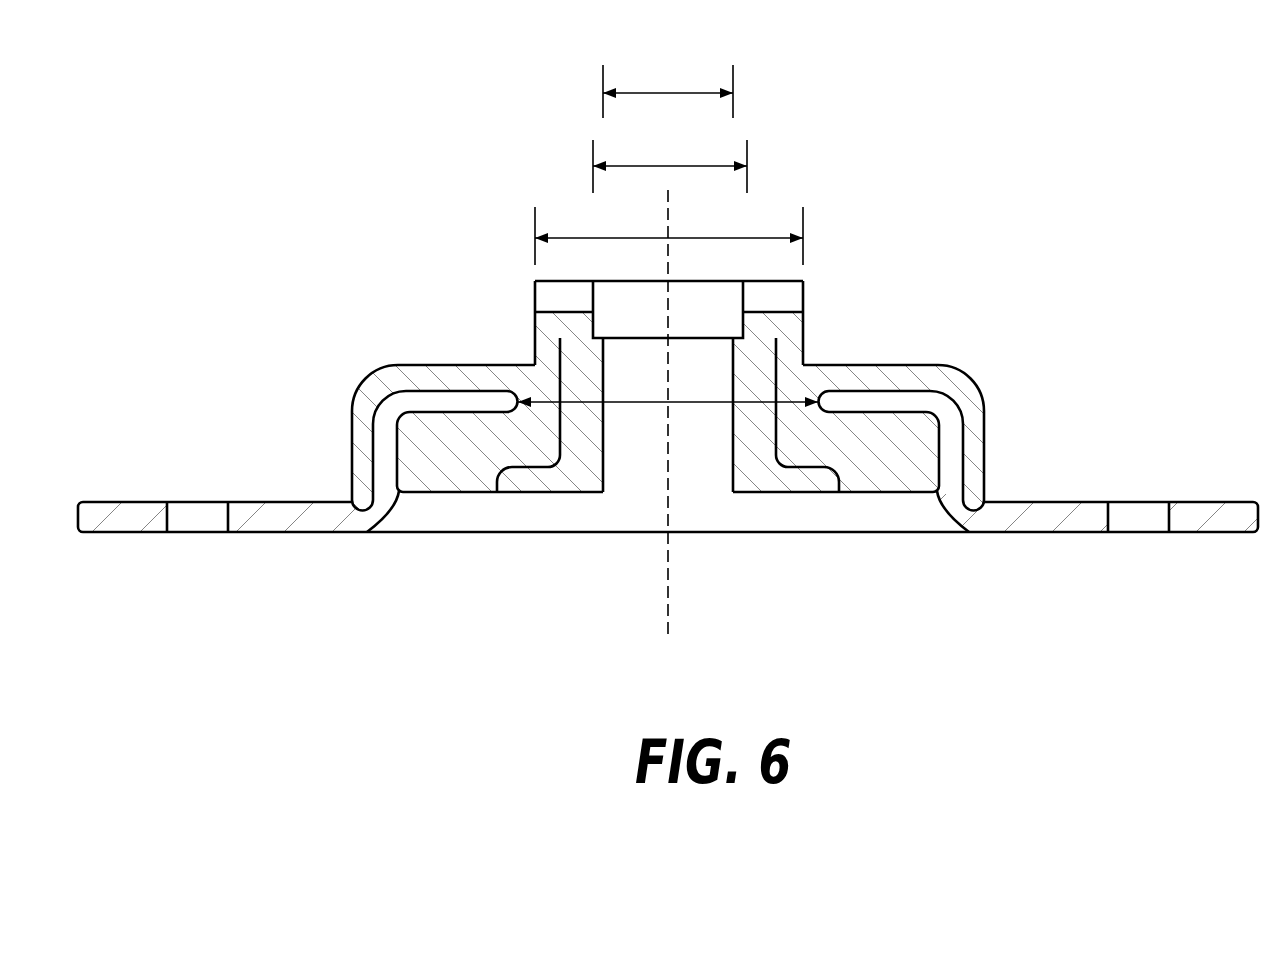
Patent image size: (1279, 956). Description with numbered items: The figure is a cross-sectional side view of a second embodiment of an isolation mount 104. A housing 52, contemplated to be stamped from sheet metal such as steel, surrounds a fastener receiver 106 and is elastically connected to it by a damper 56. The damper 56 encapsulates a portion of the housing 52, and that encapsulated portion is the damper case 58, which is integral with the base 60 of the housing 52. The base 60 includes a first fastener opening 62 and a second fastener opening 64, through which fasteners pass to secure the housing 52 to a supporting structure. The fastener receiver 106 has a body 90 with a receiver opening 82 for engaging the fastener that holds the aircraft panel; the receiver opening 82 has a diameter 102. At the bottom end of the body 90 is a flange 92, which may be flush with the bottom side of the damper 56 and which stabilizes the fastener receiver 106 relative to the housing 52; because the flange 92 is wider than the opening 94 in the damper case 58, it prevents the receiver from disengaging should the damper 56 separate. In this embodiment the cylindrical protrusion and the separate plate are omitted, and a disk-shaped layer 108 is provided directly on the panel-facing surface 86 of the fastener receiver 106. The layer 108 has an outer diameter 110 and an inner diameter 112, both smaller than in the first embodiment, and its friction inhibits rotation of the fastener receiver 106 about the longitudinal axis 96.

The housing 52 is at (996, 496).
The damper 56 is at (360, 395).
The damper case 58 is at (958, 456).
The base 60 is at (270, 534).
The first fastener opening 62 is at (198, 517).
The second fastener opening 64 is at (1150, 507).
The receiver opening 82 is at (618, 484).
The panel-facing surface 86 is at (556, 278).
The body 90 is at (552, 485).
The flange 92 is at (507, 484).
The opening 94 is at (693, 407).
The longitudinal axis 96 is at (668, 505).
The diameter 102 is at (683, 92).
The isolation mount 104 is at (913, 81).
The fastener receiver 106 is at (748, 484).
The layer 108 is at (805, 300).
The outer diameter 110 is at (755, 237).
The inner diameter 112 is at (705, 165).